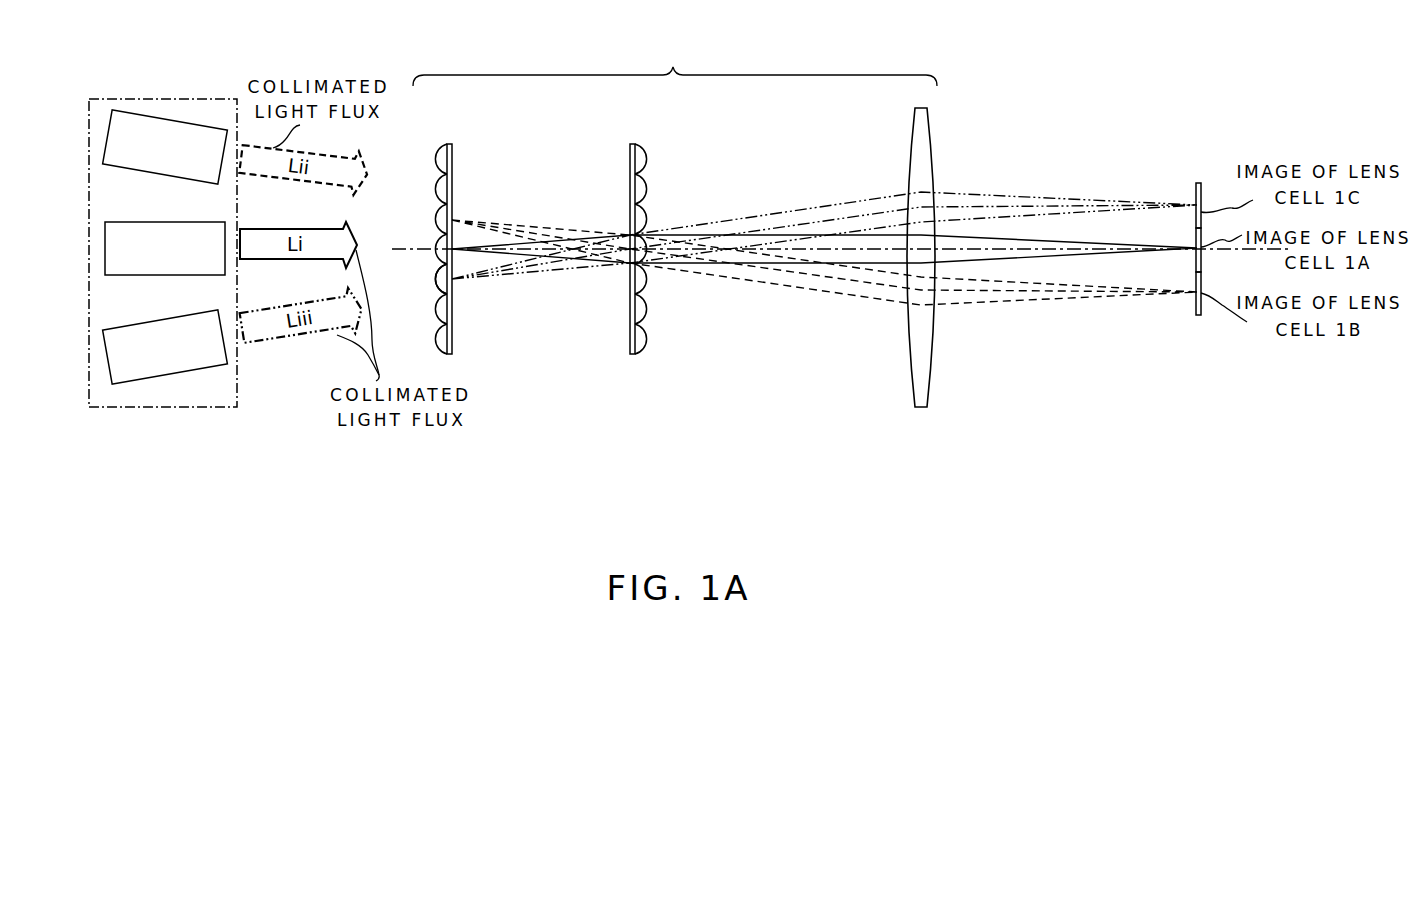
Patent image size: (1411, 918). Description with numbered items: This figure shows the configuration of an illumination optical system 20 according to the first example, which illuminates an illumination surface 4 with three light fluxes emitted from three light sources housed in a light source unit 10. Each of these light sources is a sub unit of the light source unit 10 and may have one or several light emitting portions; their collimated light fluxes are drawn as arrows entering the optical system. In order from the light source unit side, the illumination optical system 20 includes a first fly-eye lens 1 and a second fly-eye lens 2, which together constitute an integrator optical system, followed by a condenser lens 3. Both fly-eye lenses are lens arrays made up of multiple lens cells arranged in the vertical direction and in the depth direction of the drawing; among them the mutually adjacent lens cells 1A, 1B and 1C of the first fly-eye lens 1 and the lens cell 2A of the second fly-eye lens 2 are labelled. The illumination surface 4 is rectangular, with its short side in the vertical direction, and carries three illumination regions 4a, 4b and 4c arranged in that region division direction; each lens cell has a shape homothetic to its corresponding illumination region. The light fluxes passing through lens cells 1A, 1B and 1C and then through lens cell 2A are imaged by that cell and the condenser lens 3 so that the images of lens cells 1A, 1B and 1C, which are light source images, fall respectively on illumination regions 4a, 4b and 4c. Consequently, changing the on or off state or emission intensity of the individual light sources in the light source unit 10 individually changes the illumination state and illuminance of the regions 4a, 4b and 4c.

The light source unit 10 is at (203, 99).
The illumination optical system 20 is at (675, 57).
The first fly-eye lens 1 is at (414, 221).
The lens cell 1A is at (433, 249).
The lens cell 1B is at (433, 220).
The lens cell 1C is at (433, 280).
The second fly-eye lens 2 is at (609, 221).
The lens cell 2A is at (630, 235).
The condenser lens 3 is at (921, 108).
The illumination surface 4 is at (1156, 255).
The illumination region 4a is at (1197, 258).
The illumination region 4b is at (1197, 305).
The illumination region 4c is at (1195, 200).